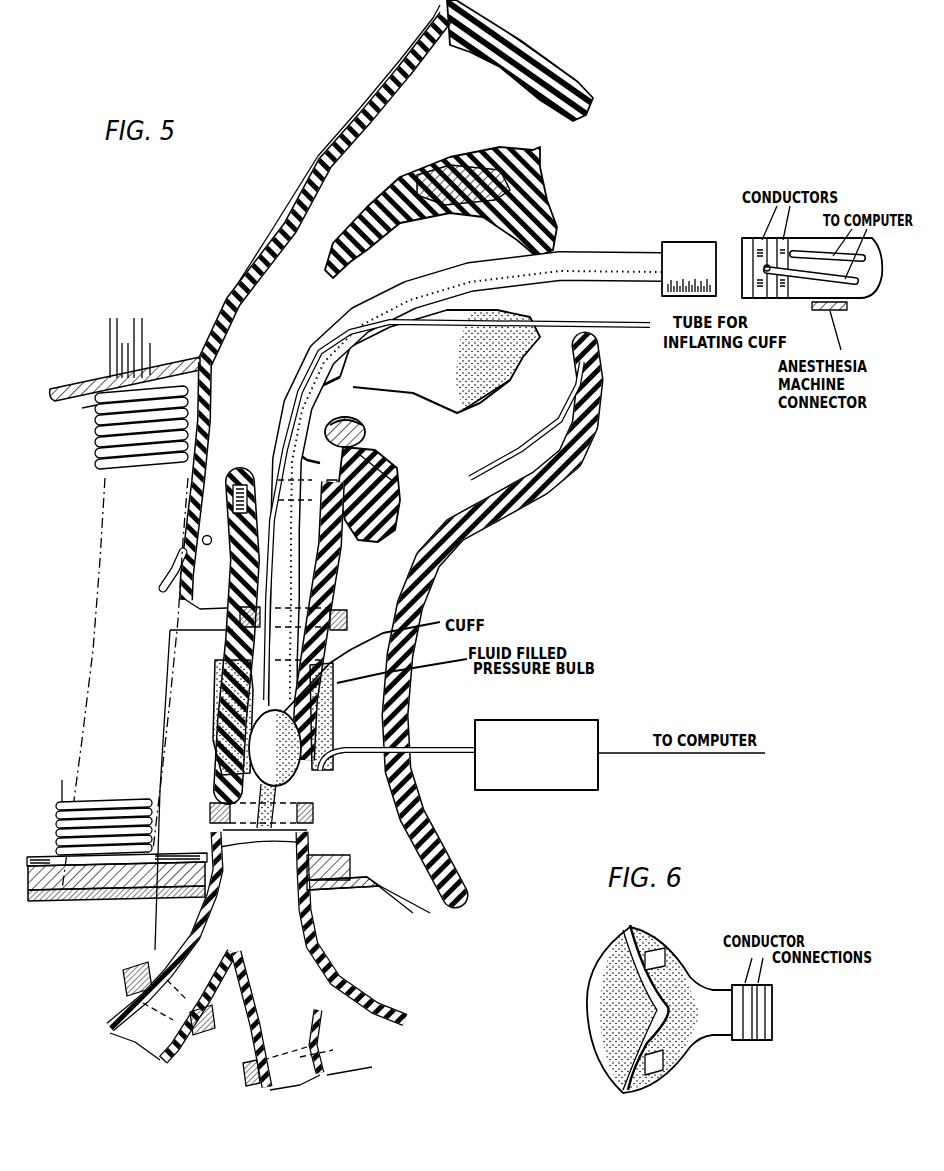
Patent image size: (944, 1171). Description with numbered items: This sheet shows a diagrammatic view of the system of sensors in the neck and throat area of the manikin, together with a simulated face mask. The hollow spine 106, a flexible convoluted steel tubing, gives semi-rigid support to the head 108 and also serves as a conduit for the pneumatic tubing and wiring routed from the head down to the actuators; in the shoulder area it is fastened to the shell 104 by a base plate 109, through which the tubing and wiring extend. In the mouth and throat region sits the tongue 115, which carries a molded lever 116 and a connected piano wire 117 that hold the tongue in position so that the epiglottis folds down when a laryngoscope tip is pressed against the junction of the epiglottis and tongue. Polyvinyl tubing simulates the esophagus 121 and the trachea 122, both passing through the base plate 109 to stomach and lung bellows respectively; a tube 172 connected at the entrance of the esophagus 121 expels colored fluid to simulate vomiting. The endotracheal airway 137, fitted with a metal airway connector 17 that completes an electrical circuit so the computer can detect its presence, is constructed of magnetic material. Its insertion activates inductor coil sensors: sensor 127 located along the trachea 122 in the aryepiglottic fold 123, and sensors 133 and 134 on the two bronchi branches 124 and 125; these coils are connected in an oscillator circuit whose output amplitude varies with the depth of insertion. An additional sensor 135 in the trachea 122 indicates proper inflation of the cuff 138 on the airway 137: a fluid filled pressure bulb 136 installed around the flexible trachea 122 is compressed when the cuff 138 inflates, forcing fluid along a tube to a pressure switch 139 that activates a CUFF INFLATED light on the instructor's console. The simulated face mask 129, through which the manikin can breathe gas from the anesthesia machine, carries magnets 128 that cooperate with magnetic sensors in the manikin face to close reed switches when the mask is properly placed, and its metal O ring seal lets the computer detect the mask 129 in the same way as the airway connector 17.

In FIG. 5, the airway connector 17 is at (677, 243).
In FIG. 5, the shell 104 is at (117, 902).
In FIG. 5, the spine 106 is at (100, 458).
In FIG. 5, the head 108 is at (58, 405).
In FIG. 5, the base plate 109 is at (40, 866).
In FIG. 5, the tongue 115 is at (522, 338).
In FIG. 5, the lever 116 is at (283, 470).
In FIG. 5, the piano wire 117 is at (375, 462).
In FIG. 5, the esophagus 121 is at (175, 682).
In FIG. 5, the trachea 122 is at (307, 837).
In FIG. 5, the aryepiglottic fold 123 is at (340, 533).
In FIG. 5, the bronchi branch 124 is at (170, 1060).
In FIG. 5, the bronchi branch 125 is at (242, 1013).
In FIG. 5, the sensor 127 is at (243, 483).
In FIG. 6, the magnets 128 is at (662, 950).
In FIG. 6, the simulated face mask 129 is at (685, 954).
In FIG. 5, the sensor 133 is at (125, 983).
In FIG. 5, the sensor 134 is at (242, 1077).
In FIG. 5, the sensor 135 is at (331, 727).
In FIG. 5, the fluid filled pressure bulb 136 is at (337, 668).
In FIG. 5, the endotracheal airway 137 is at (300, 590).
In FIG. 5, the cuff 138 is at (257, 762).
In FIG. 5, the pressure switch 139 is at (536, 720).
In FIG. 5, the tube 172 is at (182, 552).